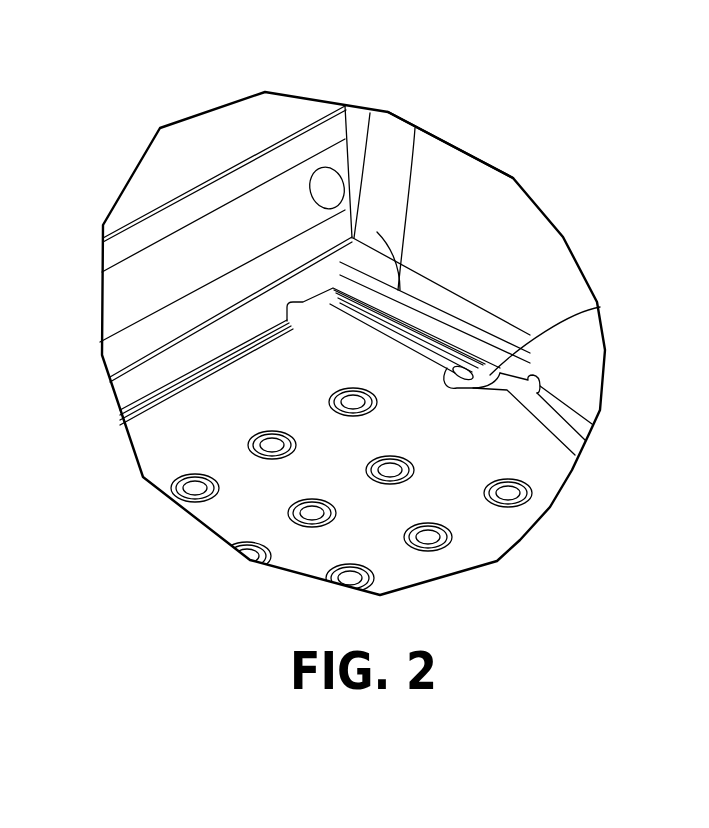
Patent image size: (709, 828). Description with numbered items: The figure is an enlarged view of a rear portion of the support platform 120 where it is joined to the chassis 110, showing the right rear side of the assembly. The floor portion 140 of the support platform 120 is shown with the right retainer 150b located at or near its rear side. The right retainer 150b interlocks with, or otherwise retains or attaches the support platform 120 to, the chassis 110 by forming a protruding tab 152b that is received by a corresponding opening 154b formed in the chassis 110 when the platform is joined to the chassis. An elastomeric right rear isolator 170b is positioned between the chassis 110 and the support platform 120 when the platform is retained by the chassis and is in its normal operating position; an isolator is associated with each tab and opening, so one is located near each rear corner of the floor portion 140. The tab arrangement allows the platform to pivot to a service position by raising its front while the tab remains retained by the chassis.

The chassis 110 is at (378, 232).
The support platform 120 is at (263, 532).
The floor portion 140 is at (375, 552).
The right retainer 150b is at (342, 103).
The protruding tab 152b is at (600, 307).
The opening 154b is at (425, 336).
The right rear isolator 170b is at (470, 356).